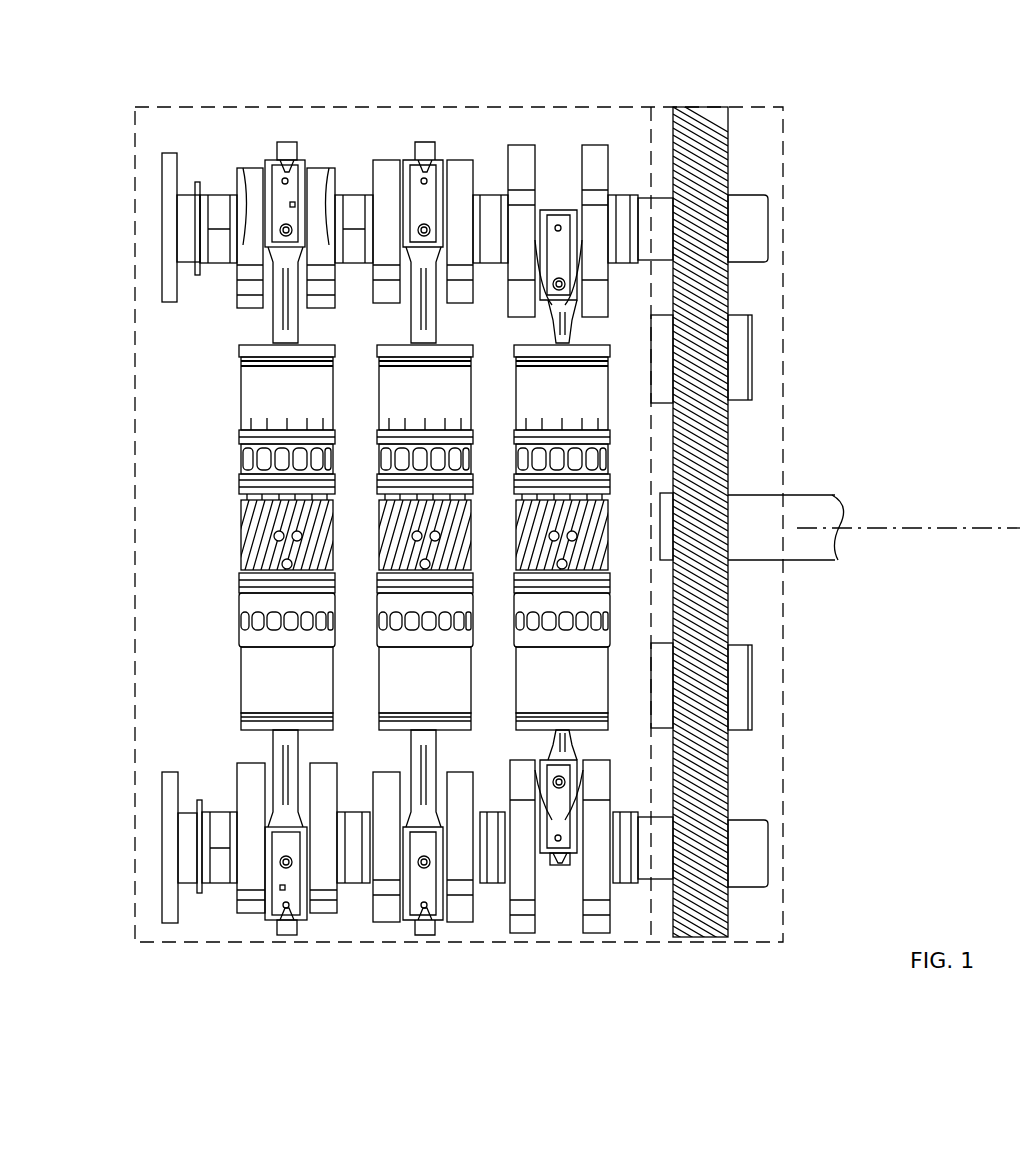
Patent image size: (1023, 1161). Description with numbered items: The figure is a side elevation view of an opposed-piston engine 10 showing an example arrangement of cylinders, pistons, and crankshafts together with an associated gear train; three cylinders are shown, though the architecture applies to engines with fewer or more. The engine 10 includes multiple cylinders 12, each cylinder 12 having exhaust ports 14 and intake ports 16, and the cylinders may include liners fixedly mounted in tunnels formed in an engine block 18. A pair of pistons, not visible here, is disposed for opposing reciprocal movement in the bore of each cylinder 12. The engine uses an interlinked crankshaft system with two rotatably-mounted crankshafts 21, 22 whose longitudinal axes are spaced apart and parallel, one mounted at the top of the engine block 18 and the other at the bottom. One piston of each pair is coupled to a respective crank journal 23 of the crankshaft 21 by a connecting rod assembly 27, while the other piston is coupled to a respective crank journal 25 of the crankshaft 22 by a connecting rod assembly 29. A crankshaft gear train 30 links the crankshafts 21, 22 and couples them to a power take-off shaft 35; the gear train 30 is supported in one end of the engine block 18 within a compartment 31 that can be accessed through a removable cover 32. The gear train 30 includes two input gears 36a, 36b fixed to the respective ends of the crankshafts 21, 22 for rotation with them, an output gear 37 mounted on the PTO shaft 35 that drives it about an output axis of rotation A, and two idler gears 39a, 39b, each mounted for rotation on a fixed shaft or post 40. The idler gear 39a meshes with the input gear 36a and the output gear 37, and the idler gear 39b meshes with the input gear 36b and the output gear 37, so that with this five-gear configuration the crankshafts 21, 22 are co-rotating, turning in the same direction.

The opposed-piston engine 10 is at (88, 118).
The cylinder 12 is at (240, 394).
The exhaust ports 14 is at (228, 469).
The intake ports 16 is at (222, 627).
The engine block 18 is at (135, 224).
The crankshaft 21 is at (213, 284).
The crankshaft 22 is at (196, 766).
The crank journal 23 is at (318, 170).
The crank journal 25 is at (325, 893).
The connecting rod assembly 27 is at (302, 318).
The connecting rod assembly 29 is at (300, 752).
The crankshaft gear train 30 is at (740, 182).
The compartment 31 is at (678, 106).
The removable cover 32 is at (785, 352).
The power take-off shaft 35 is at (830, 500).
The input gear 36a is at (733, 152).
The input gear 36b is at (735, 905).
The output gear 37 is at (733, 458).
The idler gear 39a is at (733, 410).
The idler gear 39b is at (733, 612).
The fixed shaft or post 40 is at (755, 332).
The output axis of rotation A is at (935, 532).